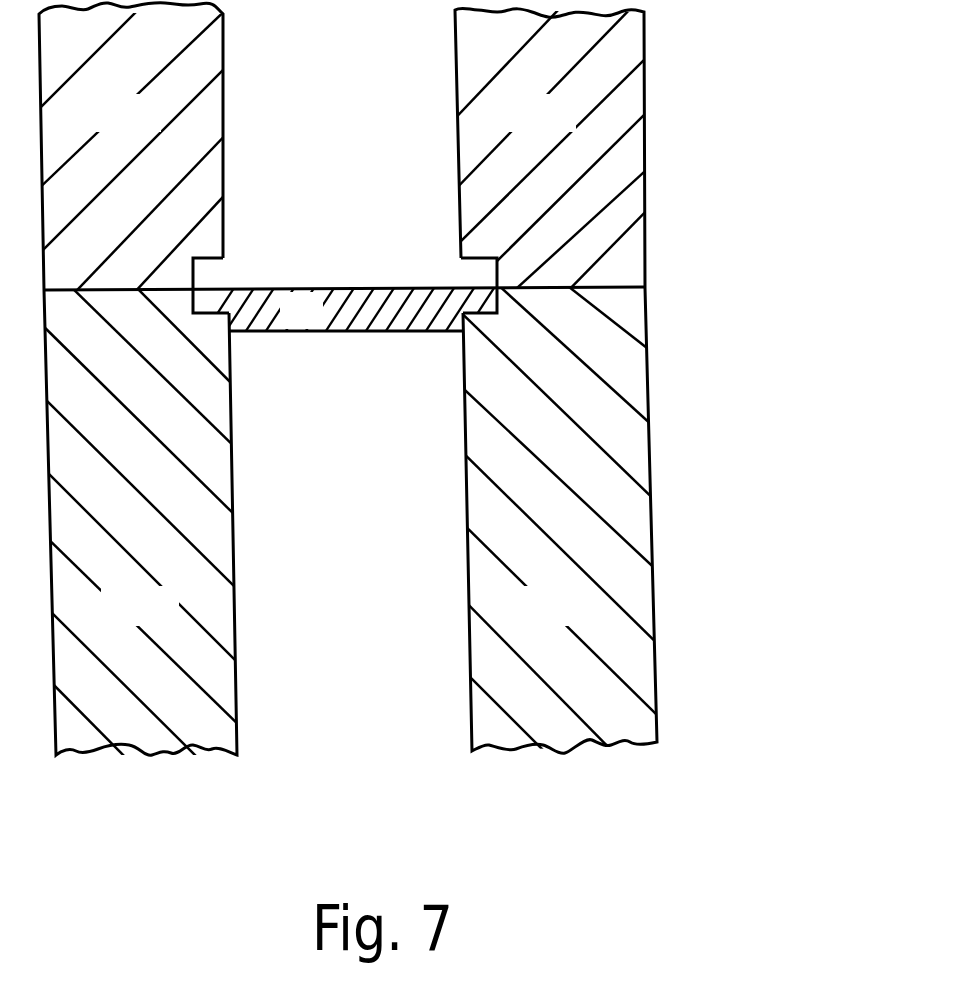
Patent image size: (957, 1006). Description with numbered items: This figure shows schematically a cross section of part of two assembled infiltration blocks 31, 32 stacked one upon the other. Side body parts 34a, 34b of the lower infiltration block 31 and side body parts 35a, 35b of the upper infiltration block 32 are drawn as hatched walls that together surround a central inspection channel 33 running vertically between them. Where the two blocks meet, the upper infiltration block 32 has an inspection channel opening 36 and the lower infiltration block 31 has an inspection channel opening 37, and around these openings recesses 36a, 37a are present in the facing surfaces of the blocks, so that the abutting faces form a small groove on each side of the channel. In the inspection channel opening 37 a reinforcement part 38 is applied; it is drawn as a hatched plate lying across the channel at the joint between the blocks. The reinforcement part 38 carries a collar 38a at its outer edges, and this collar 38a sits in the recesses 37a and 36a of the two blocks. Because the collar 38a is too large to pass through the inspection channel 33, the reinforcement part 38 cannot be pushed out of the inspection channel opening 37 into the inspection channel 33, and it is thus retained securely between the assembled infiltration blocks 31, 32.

The infiltration block 31 is at (670, 473).
The infiltration block 32 is at (662, 167).
The inspection channel 33 is at (293, 355).
The side body part 34a is at (140, 524).
The side body part 34b is at (557, 518).
The side body part 35a is at (130, 154).
The side body part 35b is at (550, 151).
The inspection channel opening 36 is at (355, 263).
The recess 36a is at (205, 263).
The inspection channel opening 37 is at (347, 343).
The recess 37a is at (198, 302).
The reinforcement part 38 is at (348, 312).
The collar 38a is at (492, 297).